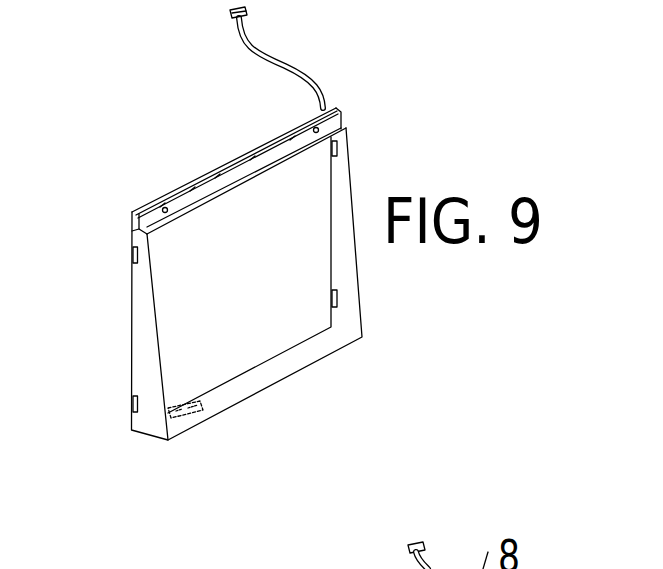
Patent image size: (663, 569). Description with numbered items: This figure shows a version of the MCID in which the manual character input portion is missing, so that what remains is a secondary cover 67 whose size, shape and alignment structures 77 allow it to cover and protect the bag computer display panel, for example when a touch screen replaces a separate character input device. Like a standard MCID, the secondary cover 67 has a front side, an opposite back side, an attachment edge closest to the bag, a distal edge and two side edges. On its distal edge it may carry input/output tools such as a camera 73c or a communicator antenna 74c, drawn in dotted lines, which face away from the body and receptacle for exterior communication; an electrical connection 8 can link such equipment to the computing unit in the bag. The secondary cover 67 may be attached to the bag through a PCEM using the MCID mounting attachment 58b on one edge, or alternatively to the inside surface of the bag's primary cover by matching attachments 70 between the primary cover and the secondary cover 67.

The electrical connection 8 is at (248, 43).
The MCID mounting attachment 58b is at (167, 203).
The secondary cover 67 is at (363, 160).
The matching attachments 70 is at (185, 276).
The alignment structures 77 is at (320, 275).
The camera 73c is at (182, 417).
The communicator antenna 74c is at (197, 412).